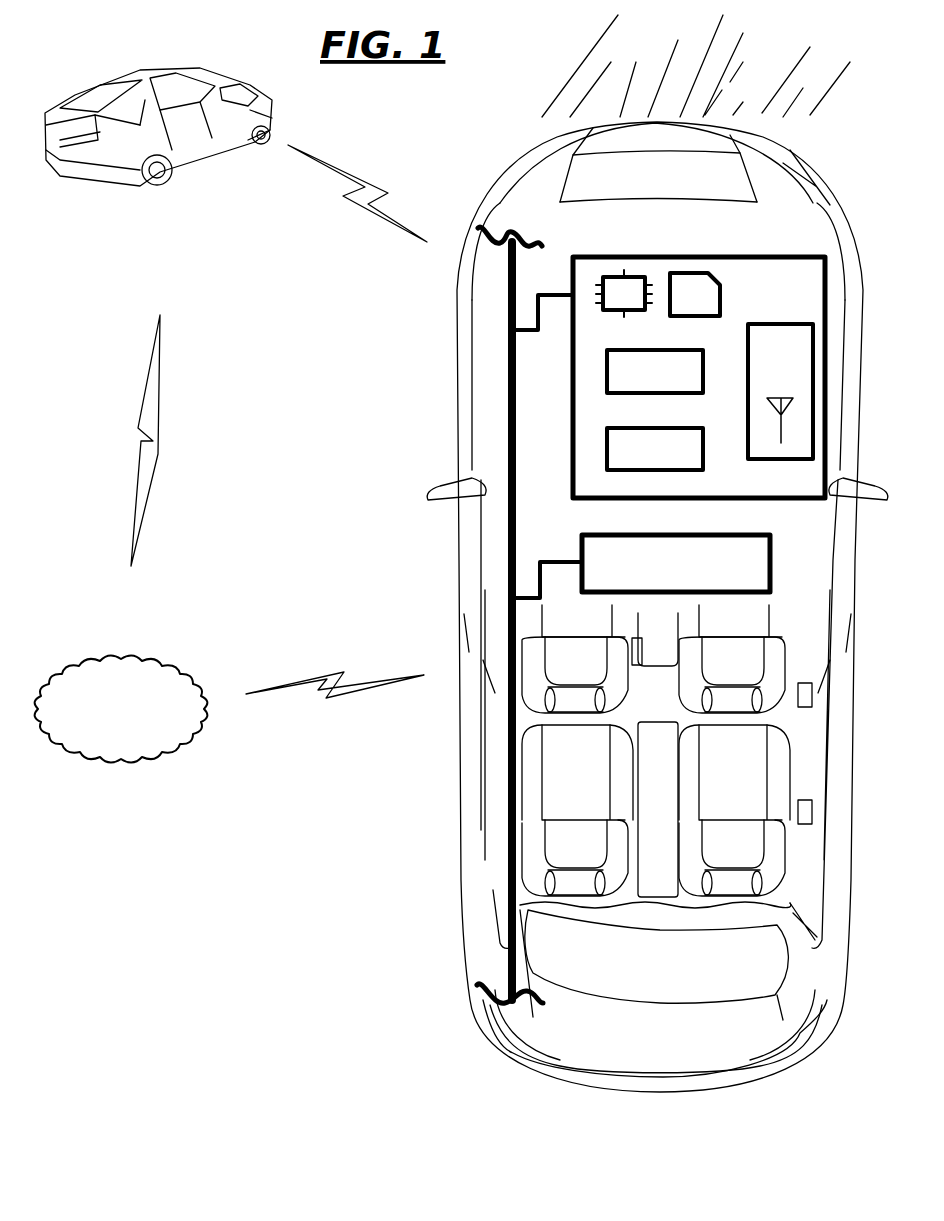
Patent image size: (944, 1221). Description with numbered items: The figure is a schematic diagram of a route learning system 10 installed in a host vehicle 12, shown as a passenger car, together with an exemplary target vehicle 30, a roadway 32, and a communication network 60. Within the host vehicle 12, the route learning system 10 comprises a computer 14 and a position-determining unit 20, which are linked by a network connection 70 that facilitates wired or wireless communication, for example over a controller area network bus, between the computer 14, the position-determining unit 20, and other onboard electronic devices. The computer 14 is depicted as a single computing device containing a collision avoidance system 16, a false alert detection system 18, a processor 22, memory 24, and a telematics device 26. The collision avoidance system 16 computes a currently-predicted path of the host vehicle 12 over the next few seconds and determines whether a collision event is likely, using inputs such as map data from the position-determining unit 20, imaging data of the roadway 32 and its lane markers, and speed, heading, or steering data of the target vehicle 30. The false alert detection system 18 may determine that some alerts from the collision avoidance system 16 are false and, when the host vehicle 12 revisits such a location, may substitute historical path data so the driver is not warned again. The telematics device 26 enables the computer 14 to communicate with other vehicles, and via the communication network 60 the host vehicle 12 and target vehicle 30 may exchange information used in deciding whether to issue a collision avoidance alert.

The route learning system 10 is at (777, 242).
The host vehicle 12 is at (594, 130).
The computer 14 is at (655, 255).
The collision avoidance system 16 is at (655, 371).
The false alert detection system 18 is at (655, 449).
The position-determining unit 20 is at (676, 563).
The processor 22 is at (624, 293).
The memory 24 is at (695, 294).
The telematics device 26 is at (780, 391).
The target vehicle 30 is at (203, 170).
The roadway 32 is at (668, 47).
The communication network 60 is at (121, 708).
The network connection 70 is at (516, 382).